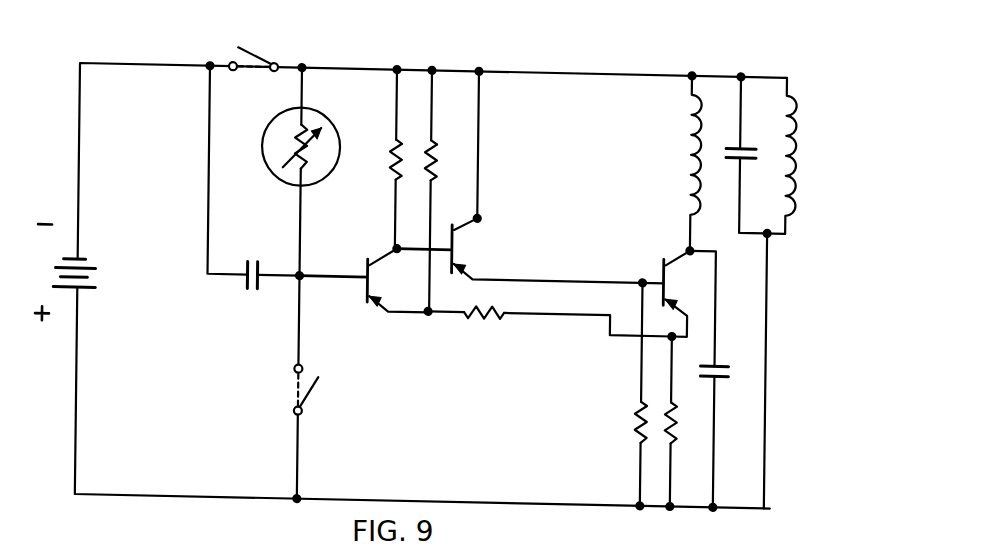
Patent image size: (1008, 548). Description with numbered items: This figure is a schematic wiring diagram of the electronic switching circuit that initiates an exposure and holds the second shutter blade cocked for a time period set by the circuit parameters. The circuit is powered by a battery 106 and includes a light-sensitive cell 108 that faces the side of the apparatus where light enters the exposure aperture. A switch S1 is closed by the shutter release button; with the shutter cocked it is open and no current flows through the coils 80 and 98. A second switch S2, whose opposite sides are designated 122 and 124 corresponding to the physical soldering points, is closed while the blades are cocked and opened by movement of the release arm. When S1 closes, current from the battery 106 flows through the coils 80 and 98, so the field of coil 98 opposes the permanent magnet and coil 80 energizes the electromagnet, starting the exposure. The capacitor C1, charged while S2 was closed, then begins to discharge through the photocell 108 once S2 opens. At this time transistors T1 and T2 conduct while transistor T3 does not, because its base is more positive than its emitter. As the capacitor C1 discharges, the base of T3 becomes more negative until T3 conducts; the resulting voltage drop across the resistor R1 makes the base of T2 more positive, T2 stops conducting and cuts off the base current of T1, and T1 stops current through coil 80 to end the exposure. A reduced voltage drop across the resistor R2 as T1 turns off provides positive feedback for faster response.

The battery 106 is at (82, 257).
The light-sensitive cell 108 is at (326, 176).
The end of coil spring 122 is at (298, 366).
The point 124 is at (298, 410).
The coil 98 is at (690, 146).
The coil 80 is at (786, 124).
The switch S1 is at (270, 60).
The second switch S2 is at (296, 386).
The capacitor C1 is at (247, 262).
The resistor R1 is at (392, 146).
The resistor R2 is at (678, 422).
The transistor T1 is at (671, 254).
The transistor T2 is at (462, 230).
The transistor T3 is at (375, 288).